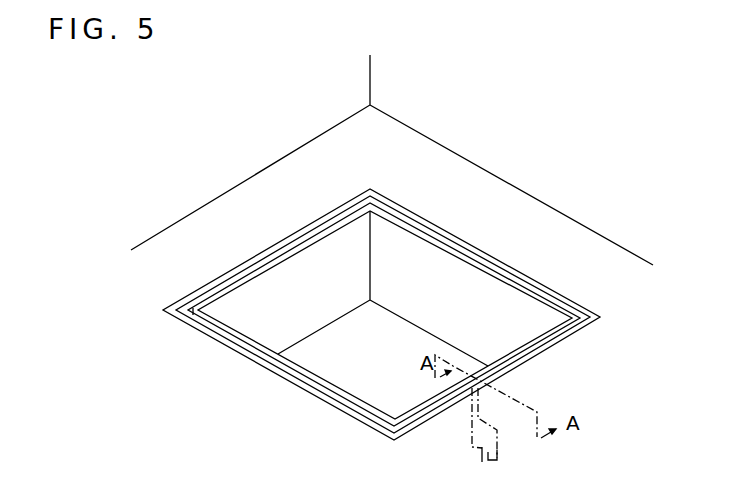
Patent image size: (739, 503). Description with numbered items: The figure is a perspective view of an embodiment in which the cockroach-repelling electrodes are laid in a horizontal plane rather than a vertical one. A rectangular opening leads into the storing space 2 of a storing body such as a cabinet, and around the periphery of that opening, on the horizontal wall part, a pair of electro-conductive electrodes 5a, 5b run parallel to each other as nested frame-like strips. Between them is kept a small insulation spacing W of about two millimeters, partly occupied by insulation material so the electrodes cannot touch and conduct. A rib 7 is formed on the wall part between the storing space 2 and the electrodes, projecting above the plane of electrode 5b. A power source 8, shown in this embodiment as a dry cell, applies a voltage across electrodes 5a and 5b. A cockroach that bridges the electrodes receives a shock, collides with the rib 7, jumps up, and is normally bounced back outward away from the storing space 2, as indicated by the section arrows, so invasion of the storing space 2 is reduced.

The storing space 2 is at (428, 297).
The rib 7 is at (498, 355).
The electrode 5a is at (522, 342).
The electrode 5b is at (565, 339).
The insulation spacing W is at (512, 362).
The power source 8 is at (480, 462).